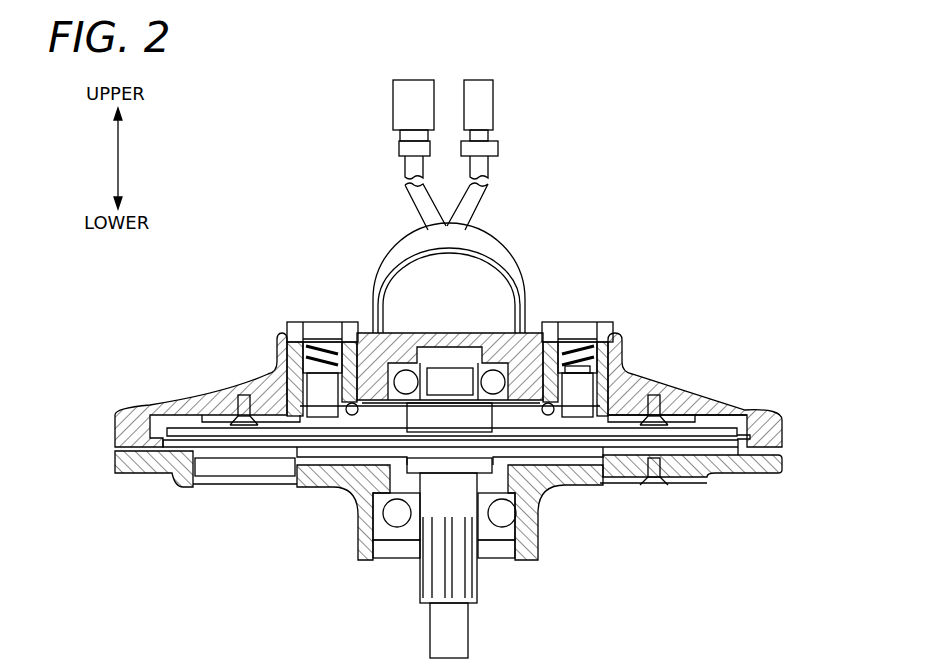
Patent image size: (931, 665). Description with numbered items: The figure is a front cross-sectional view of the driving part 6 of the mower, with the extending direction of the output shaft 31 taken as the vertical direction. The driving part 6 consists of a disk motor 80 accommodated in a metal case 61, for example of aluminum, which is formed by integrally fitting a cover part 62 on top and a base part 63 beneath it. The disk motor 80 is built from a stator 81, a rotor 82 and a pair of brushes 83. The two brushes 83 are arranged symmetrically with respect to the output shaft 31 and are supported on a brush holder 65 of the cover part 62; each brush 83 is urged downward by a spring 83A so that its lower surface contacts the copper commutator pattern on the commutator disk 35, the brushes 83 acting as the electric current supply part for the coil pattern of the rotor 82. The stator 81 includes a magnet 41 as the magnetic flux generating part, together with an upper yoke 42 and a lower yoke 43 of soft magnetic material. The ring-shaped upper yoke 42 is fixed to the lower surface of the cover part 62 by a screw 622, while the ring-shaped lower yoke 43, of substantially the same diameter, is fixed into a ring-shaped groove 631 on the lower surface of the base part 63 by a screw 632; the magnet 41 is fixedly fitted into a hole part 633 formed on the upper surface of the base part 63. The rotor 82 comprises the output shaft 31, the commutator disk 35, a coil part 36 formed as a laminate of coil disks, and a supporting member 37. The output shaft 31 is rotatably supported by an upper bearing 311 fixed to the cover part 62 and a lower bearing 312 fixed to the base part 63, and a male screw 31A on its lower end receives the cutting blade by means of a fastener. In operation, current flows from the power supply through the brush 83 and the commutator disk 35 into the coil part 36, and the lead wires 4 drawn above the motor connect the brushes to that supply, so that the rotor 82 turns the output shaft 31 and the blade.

The driving part 6 is at (333, 487).
The stator / coil unit with lead wires 4 is at (478, 273).
The upper bearing 311 is at (385, 388).
The disk motor 80 is at (312, 272).
The stator 81 is at (150, 315).
The rotor 82 is at (278, 420).
The brush 83 is at (298, 333).
The spring 83A is at (323, 375).
The brush holder 65 is at (325, 405).
The commutator disk 35 is at (585, 395).
The case 61 is at (112, 523).
The cover part 62 is at (150, 418).
The base part 63 is at (138, 475).
The hole part 633 is at (188, 480).
The ring-shaped groove 631 is at (597, 483).
The screw 632 is at (658, 485).
The coil part 36 is at (722, 437).
The screw 622 is at (672, 415).
The supporting member 37 is at (600, 450).
The magnet 41 is at (208, 468).
The upper yoke 42 is at (212, 425).
The lower yoke 43 is at (242, 485).
The lower bearing 312 is at (377, 525).
The output shaft 31 is at (468, 587).
The male screw 31A is at (455, 640).